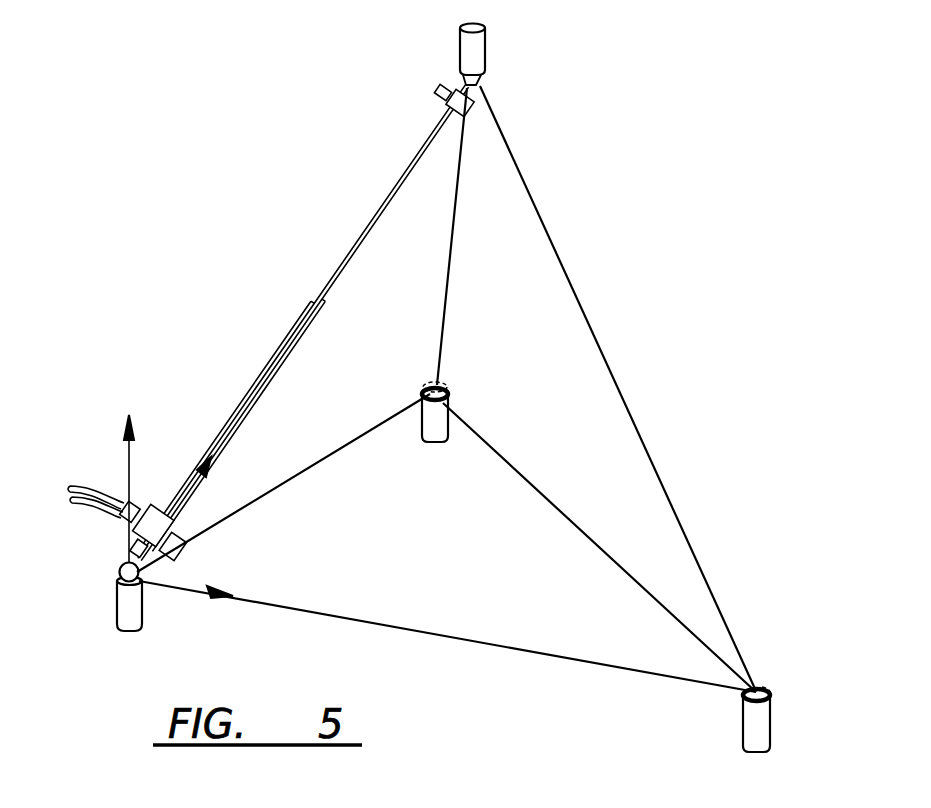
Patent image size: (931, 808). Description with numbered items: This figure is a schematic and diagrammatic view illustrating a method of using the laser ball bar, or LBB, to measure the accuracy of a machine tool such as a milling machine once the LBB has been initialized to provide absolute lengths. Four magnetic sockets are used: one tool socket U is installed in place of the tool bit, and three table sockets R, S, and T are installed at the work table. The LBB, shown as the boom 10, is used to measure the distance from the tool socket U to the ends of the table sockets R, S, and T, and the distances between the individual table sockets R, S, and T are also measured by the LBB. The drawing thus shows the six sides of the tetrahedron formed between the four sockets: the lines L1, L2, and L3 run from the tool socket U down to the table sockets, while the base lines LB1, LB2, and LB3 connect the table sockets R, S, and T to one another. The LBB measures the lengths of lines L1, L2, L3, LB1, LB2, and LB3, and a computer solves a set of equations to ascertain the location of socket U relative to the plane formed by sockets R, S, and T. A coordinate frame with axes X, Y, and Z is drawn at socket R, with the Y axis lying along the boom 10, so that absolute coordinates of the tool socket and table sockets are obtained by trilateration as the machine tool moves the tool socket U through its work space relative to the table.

The tool socket U is at (480, 55).
The table socket R is at (120, 607).
The table socket T is at (433, 437).
The table socket S is at (765, 730).
The line L1 is at (330, 272).
The line L2 is at (582, 302).
The line L3 is at (450, 286).
The line LB1 is at (390, 627).
The line LB2 is at (582, 534).
The line LB3 is at (300, 476).
The X coordinate axis X is at (200, 592).
The Y coordinate axis Y is at (187, 500).
The Z coordinate axis Z is at (126, 476).
The measuring boom 10 is at (230, 386).